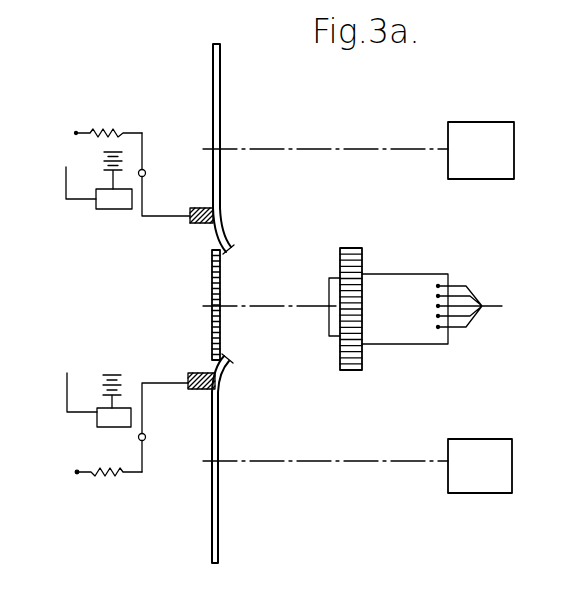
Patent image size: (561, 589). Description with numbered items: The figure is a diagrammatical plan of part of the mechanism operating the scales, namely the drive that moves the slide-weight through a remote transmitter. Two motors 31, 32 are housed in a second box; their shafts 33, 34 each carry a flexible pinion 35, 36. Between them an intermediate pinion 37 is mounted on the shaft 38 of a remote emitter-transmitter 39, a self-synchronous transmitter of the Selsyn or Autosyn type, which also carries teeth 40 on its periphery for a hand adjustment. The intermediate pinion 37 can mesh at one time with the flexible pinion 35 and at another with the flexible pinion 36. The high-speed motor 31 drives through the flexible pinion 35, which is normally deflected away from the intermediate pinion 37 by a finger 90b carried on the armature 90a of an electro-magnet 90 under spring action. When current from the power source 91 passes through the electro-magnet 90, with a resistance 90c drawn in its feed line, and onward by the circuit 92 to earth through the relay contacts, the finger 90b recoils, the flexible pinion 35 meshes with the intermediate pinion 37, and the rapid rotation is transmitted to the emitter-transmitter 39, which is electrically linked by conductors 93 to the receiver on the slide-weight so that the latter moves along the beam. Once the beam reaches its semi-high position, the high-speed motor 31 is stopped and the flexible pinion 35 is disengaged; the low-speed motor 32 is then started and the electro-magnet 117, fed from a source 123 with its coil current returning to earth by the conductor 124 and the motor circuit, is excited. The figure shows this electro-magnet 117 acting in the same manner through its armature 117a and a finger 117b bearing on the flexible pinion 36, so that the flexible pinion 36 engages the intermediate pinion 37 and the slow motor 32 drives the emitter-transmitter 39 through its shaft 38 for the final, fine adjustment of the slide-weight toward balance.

The motor 31 is at (468, 448).
The motor 32 is at (470, 131).
The shaft 33 is at (296, 461).
The shaft 34 is at (342, 149).
The flexible pinion 35 is at (219, 416).
The flexible pinion 36 is at (221, 118).
The intermediate pinion 37 is at (212, 286).
The shaft 38 is at (290, 298).
The emitter-transmitter 39 is at (424, 338).
The teeth 40 is at (362, 262).
The electro-magnet 90 is at (100, 421).
The armature 90a is at (142, 425).
The finger 90b is at (190, 373).
The resistor 90c is at (97, 478).
The power source 91 is at (106, 377).
The circuit 92 is at (67, 385).
The conductors 93 is at (485, 307).
The electro-magnet 117 is at (101, 204).
The relay contact lead 117a is at (162, 215).
The contact block 117b is at (199, 223).
The source 123 is at (104, 165).
The conductor 124 is at (66, 172).